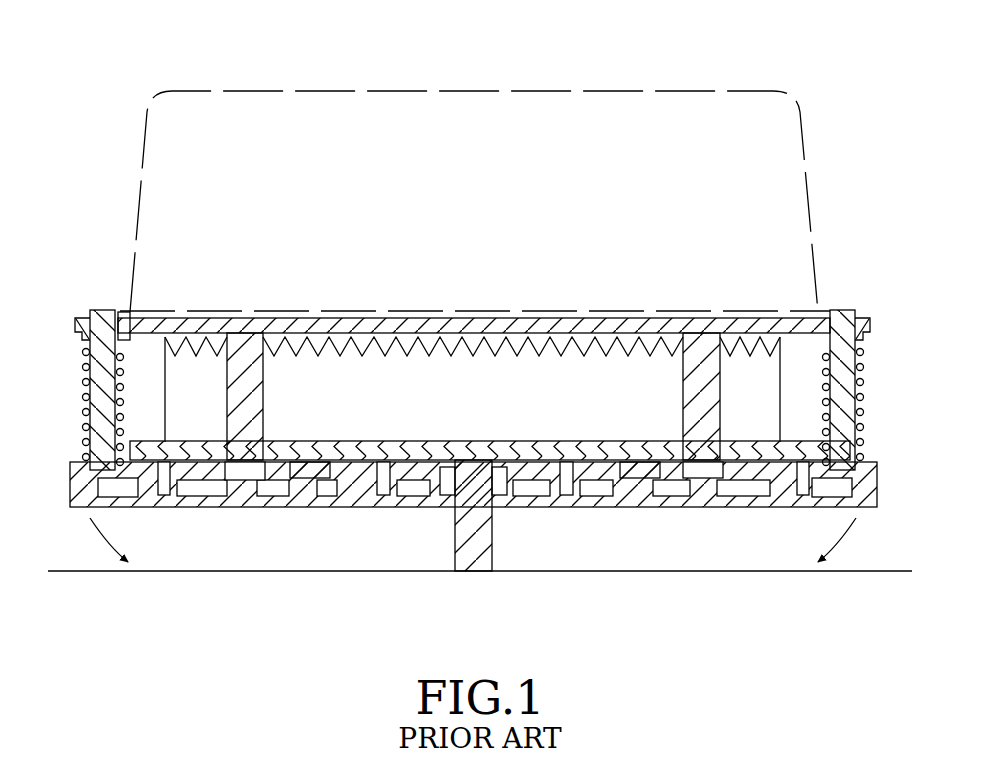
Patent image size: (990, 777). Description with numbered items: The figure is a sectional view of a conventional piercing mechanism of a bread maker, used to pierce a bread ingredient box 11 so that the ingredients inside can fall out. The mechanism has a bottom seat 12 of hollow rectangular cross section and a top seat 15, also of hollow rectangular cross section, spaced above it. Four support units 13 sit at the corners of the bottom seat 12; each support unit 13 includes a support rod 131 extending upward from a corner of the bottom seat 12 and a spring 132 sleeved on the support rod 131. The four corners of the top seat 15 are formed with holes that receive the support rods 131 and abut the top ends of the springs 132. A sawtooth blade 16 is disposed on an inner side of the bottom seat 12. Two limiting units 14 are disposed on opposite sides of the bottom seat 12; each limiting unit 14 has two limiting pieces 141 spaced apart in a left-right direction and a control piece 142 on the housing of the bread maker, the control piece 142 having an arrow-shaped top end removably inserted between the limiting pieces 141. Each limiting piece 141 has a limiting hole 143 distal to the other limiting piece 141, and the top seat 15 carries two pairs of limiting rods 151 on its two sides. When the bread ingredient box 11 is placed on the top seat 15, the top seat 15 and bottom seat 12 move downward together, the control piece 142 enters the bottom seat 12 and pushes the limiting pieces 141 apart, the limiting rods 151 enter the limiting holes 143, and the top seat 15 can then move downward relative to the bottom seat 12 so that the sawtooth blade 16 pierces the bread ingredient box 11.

The bread ingredient box 11 is at (635, 135).
The bottom seat 12 is at (642, 500).
The support unit 13 is at (100, 302).
The support rod 131 is at (100, 405).
The spring 132 is at (85, 350).
The limiting unit 14 is at (446, 527).
The limiting piece 141 is at (307, 475).
The control piece 142 is at (472, 558).
The limiting hole 143 is at (245, 472).
The top seat 15 is at (541, 325).
The limiting rod 151 is at (237, 362).
The sawtooth blade 16 is at (449, 373).